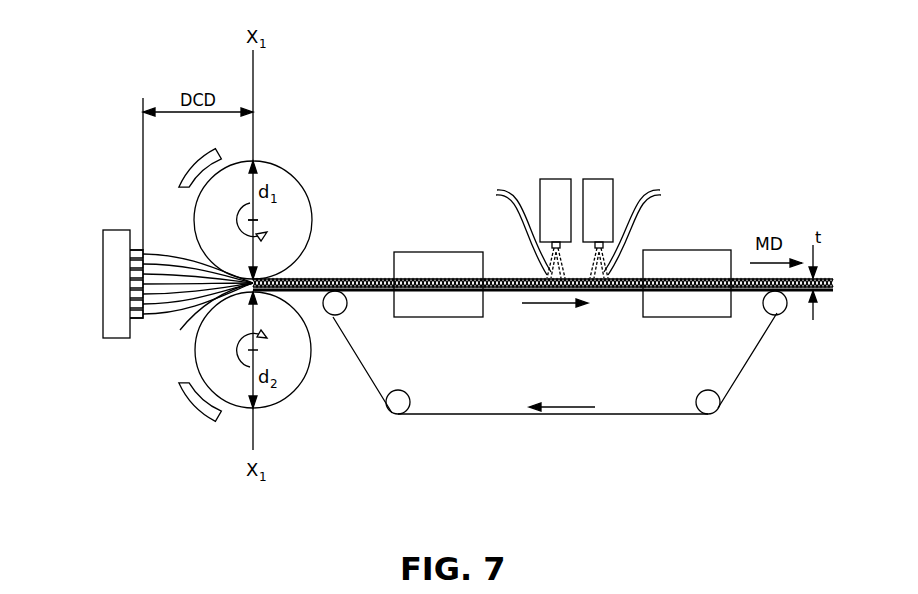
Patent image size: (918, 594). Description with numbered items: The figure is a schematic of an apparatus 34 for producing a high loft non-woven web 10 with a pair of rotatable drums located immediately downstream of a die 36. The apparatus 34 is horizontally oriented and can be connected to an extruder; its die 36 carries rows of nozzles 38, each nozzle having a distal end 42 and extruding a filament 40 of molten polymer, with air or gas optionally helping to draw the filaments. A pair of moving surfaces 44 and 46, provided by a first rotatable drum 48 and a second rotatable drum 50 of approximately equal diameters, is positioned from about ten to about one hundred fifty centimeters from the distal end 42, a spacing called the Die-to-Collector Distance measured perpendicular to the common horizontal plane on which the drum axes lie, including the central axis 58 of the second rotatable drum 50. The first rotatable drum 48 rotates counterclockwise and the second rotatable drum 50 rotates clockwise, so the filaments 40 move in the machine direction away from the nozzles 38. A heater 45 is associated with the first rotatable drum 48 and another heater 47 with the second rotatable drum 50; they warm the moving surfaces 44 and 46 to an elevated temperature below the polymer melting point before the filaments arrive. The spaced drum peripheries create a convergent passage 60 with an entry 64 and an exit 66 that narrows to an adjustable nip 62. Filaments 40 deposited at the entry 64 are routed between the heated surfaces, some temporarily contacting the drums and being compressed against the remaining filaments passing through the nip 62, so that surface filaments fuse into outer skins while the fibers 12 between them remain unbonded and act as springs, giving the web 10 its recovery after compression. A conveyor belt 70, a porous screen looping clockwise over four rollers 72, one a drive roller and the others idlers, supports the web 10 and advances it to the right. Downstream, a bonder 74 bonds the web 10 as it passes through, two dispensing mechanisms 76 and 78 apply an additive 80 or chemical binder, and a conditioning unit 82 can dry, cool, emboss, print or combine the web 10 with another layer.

The apparatus 34 is at (716, 43).
The die 36 is at (111, 230).
The nozzles 38 is at (134, 250).
The filament 40 is at (152, 318).
The distal end 42 is at (150, 252).
The first moving surface 44 is at (270, 162).
The heater 45 is at (192, 170).
The second moving surface 46 is at (289, 404).
The heater 47 is at (192, 397).
The first rotatable drum 48 is at (304, 172).
The second rotatable drum 50 is at (272, 412).
The central axis 58 is at (262, 222).
The convergent passage 60 is at (206, 266).
The nip 62 is at (274, 263).
The entry 64 is at (217, 303).
The exit 66 is at (282, 294).
The high loft non-woven web 10 is at (343, 270).
The fibers 12 is at (373, 278).
The conveyor belt 70 is at (634, 412).
The rollers 72 is at (338, 314).
The bonder 74 is at (437, 252).
The dispensing mechanism 76 is at (540, 187).
The dispensing mechanism 78 is at (614, 187).
The additive 80 is at (582, 227).
The conditioning unit 82 is at (707, 250).